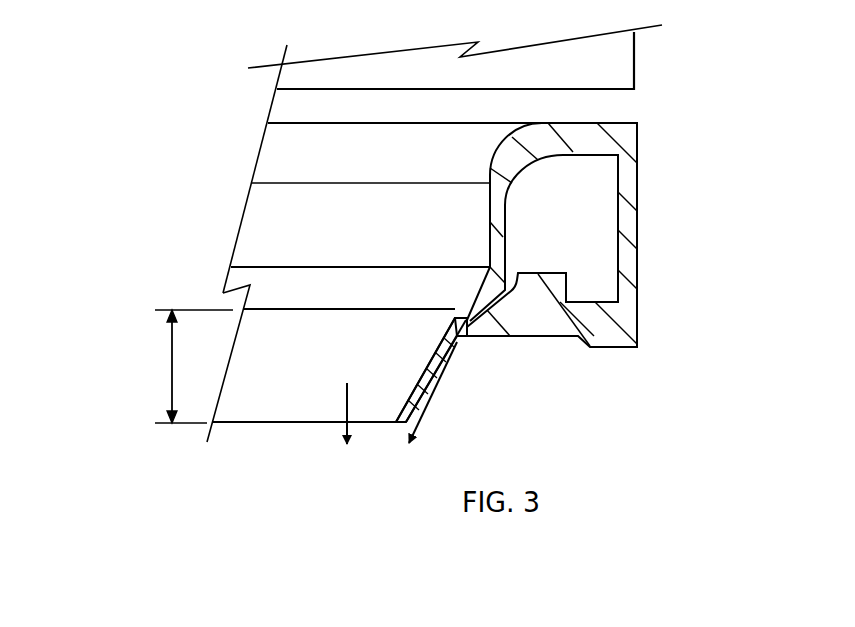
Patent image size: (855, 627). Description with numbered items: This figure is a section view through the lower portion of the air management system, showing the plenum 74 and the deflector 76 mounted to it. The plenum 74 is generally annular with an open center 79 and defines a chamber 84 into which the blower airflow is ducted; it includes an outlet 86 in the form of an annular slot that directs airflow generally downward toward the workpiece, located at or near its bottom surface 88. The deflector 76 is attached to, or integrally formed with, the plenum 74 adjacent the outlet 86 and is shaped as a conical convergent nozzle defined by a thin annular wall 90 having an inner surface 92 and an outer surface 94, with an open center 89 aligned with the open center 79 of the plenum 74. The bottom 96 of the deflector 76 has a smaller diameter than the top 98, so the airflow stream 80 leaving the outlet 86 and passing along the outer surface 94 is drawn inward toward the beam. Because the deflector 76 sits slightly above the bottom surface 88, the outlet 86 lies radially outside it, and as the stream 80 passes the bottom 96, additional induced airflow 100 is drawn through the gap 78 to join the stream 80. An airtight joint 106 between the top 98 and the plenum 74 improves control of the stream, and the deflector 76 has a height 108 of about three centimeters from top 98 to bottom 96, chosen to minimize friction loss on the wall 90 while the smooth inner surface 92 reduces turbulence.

The plenum 74 is at (630, 187).
The deflector 76 is at (257, 423).
The gap 78 is at (642, 107).
The open center 79 is at (338, 229).
The airflow stream 80 is at (430, 400).
The chamber 84 is at (578, 229).
The outlet 86 is at (469, 337).
The bottom surface 88 is at (530, 337).
The open center 89 is at (276, 350).
The annular wall 90 is at (409, 397).
The inner surface 92 is at (420, 365).
The outer surface 94 is at (428, 380).
The bottom 96 is at (400, 422).
The top 98 is at (458, 316).
The induced airflow 100 is at (340, 425).
The airtight joint 106 is at (464, 318).
The height 108 is at (170, 358).